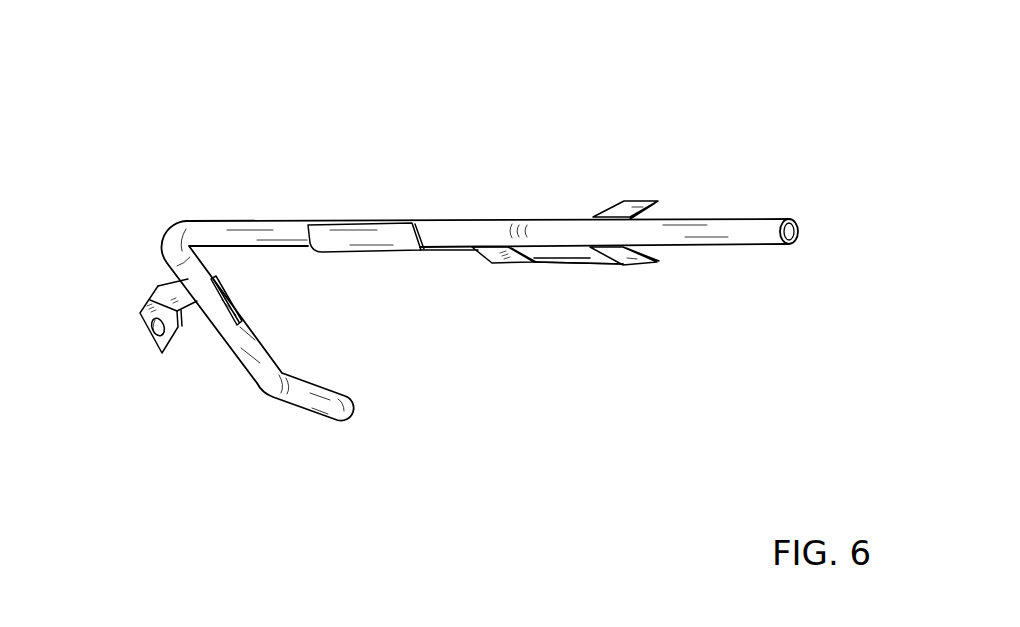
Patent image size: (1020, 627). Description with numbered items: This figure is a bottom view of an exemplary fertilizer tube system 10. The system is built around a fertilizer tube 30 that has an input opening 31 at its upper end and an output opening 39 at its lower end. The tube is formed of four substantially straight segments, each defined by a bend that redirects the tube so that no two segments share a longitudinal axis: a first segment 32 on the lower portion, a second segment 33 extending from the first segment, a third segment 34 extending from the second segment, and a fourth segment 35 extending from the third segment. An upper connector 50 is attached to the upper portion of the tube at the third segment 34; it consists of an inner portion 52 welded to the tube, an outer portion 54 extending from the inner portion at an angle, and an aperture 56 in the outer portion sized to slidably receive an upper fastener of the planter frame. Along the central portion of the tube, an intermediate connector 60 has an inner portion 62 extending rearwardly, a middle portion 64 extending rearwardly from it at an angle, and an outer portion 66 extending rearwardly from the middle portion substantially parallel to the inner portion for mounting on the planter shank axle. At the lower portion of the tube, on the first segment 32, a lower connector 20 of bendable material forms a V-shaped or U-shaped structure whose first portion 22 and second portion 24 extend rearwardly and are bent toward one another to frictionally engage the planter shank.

The fertilizer tube system 10 is at (707, 110).
The lower connector 20 is at (640, 197).
The first portion 22 is at (643, 263).
The second portion 24 is at (605, 200).
The fertilizer tube 30 is at (445, 218).
The input opening 31 is at (352, 408).
The first segment 32 is at (713, 218).
The second segment 33 is at (287, 218).
The third segment 34 is at (260, 338).
The fourth segment 35 is at (315, 382).
The output opening 39 is at (800, 229).
The upper connector 50 is at (147, 298).
The inner portion 52 is at (163, 282).
The outer portion 54 is at (148, 324).
The aperture 56 is at (147, 337).
The intermediate connector 60 is at (520, 263).
The inner portion 62 is at (423, 252).
The middle portion 64 is at (483, 262).
The outer portion 66 is at (565, 263).